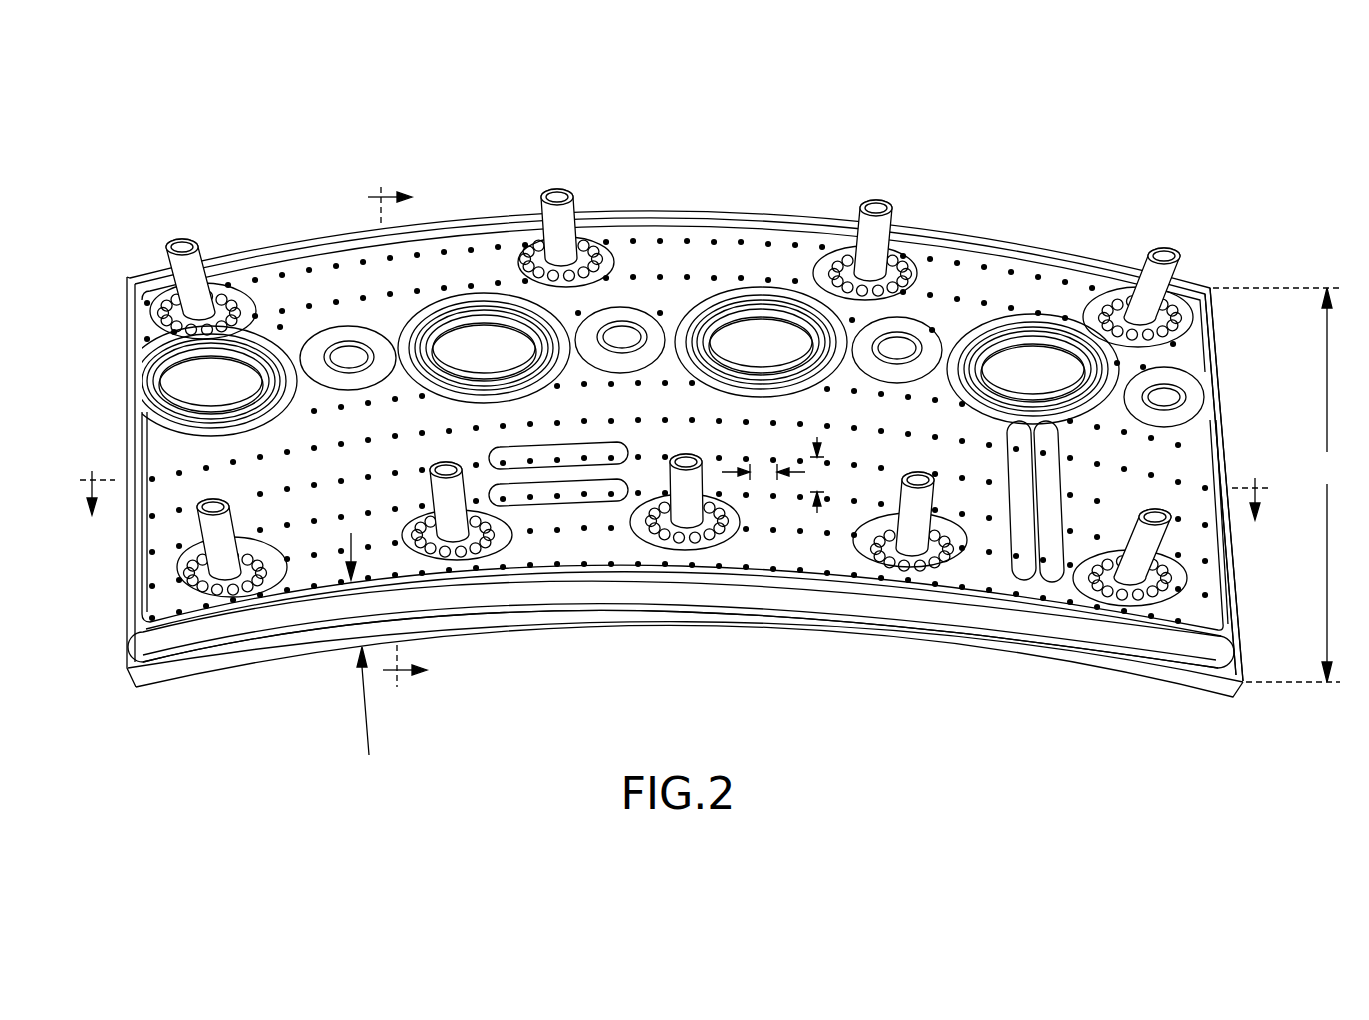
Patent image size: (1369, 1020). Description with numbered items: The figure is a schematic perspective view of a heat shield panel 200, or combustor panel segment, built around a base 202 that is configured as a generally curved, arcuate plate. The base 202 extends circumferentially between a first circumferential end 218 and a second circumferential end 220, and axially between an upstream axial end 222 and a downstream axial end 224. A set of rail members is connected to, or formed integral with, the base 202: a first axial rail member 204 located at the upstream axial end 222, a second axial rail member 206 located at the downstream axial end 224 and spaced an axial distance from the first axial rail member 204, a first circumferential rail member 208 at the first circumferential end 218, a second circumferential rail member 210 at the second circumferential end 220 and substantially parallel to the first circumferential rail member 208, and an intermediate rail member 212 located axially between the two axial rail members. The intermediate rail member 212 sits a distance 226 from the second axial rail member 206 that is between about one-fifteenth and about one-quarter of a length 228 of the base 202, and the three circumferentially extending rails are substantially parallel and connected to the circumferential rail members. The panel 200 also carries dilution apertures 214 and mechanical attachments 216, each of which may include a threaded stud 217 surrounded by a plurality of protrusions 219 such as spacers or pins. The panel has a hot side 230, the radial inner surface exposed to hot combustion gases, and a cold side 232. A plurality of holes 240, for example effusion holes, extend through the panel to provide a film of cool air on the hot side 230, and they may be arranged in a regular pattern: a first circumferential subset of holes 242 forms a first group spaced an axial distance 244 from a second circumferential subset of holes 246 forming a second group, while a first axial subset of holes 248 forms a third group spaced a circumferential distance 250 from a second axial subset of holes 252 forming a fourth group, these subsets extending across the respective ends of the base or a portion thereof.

The heat shield panel 200 is at (250, 92).
The base 202 is at (152, 522).
The first axial rail member 204 is at (702, 222).
The second axial rail member 206 is at (810, 625).
The first circumferential rail member 208 is at (130, 317).
The second circumferential rail member 210 is at (1214, 345).
The intermediate rail member 212 is at (898, 583).
The dilution aperture 214 is at (713, 297).
The mechanical attachment 216 is at (877, 210).
The threaded stud 217 is at (865, 228).
The first circumferential end 218 is at (128, 350).
The protrusions 219 is at (910, 267).
The second circumferential end 220 is at (1234, 594).
The upstream axial end 222 is at (1003, 242).
The downstream axial end 224 is at (1097, 668).
The distance 226 is at (362, 738).
The length 228 is at (1279, 485).
The hot side 230 is at (177, 680).
The cold side 232 is at (156, 598).
The holes 240 is at (631, 240).
The first circumferential subset of holes 242 is at (537, 495).
The axial distance 244 is at (812, 515).
The second circumferential subset of holes 246 is at (570, 455).
The first axial subset of holes 248 is at (1017, 570).
The circumferential distance 250 is at (740, 478).
The second axial subset of holes 252 is at (1053, 573).